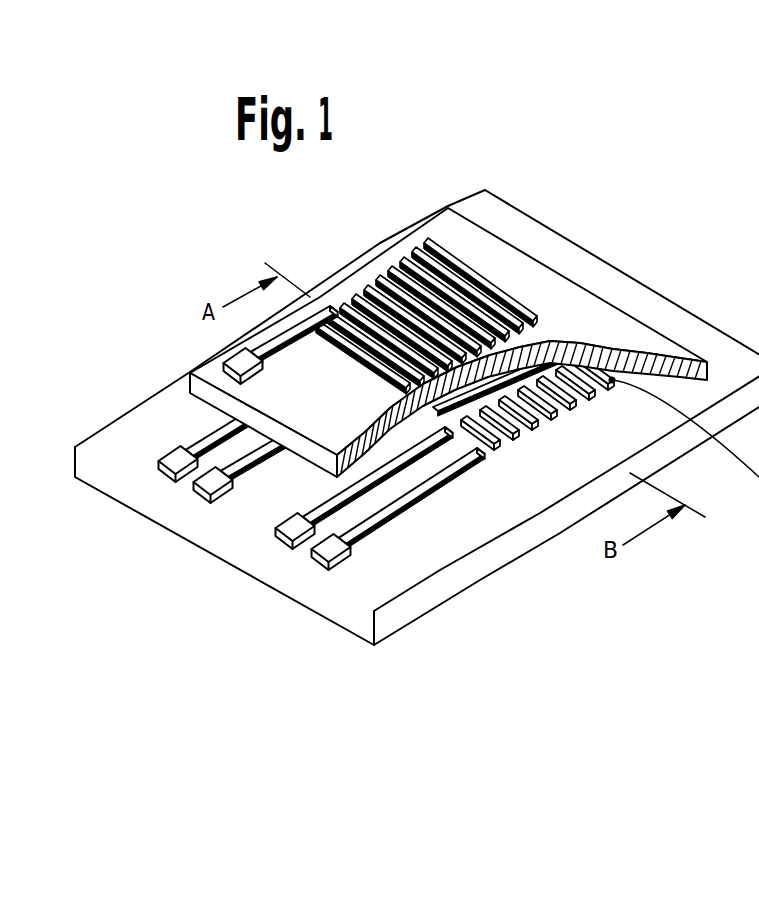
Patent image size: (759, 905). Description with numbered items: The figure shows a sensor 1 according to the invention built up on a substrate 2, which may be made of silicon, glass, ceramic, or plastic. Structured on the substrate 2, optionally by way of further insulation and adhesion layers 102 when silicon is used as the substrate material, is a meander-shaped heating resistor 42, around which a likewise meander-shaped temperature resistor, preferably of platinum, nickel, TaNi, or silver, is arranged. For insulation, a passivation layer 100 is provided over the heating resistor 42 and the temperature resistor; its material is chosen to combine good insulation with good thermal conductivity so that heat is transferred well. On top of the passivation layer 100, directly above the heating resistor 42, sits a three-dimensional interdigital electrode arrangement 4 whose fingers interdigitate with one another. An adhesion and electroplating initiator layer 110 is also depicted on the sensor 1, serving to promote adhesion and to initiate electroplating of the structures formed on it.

The substrate 1 is at (385, 572).
The substrate 2 is at (490, 215).
The three-dimensional interdigital electrode arrangement 4 is at (438, 236).
The meander-shaped heating resistor 42 is at (487, 457).
The passivation layer 100 is at (551, 278).
The insulation and adhesion layers 102 is at (428, 498).
The adhesion and electroplating initiator layer 110 is at (228, 380).